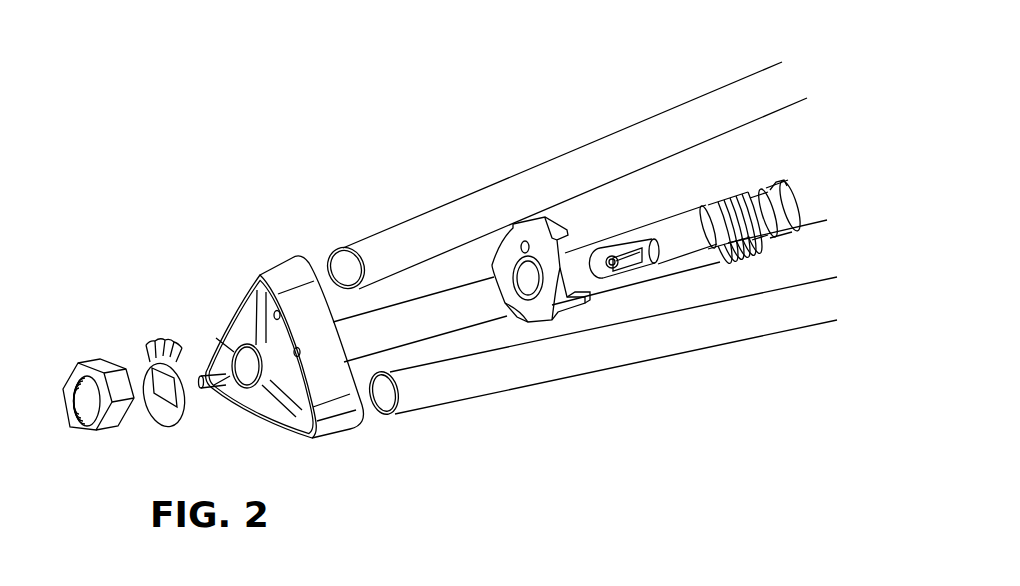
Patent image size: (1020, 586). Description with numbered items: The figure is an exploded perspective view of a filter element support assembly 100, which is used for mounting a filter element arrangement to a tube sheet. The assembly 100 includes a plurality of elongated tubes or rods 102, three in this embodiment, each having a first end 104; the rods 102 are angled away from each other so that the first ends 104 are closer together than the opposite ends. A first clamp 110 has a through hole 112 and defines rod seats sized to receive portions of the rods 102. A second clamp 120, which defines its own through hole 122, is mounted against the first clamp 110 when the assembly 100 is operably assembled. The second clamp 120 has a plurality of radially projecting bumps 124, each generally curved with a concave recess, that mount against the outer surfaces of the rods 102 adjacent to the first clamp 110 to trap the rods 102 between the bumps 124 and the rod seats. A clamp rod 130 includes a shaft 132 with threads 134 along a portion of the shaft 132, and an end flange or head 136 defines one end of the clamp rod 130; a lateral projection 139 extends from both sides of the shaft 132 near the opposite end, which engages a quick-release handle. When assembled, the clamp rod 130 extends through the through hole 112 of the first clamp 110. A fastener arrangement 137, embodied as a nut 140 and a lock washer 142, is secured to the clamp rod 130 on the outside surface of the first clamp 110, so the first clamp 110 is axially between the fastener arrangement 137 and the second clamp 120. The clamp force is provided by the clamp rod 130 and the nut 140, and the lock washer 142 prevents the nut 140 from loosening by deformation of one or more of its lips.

The filter element support assembly 100 is at (640, 66).
The elongated tubes or rods 102 is at (447, 315).
The first end 104 is at (332, 249).
The first clamp 110 is at (284, 268).
The through hole 112 is at (243, 378).
The second clamp 120 is at (558, 232).
The through hole 122 is at (518, 300).
The radially projecting bumps 124 is at (578, 318).
The clamp rod 130 is at (694, 211).
The shaft 132 is at (668, 240).
The threads 134 is at (718, 205).
The end flange or head 136 is at (784, 198).
The fastener arrangement 137 is at (158, 332).
The lateral projection 139 is at (620, 266).
The nut 140 is at (97, 438).
The lock washer 142 is at (168, 344).